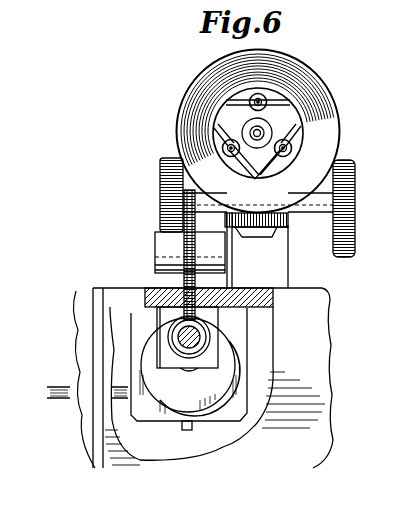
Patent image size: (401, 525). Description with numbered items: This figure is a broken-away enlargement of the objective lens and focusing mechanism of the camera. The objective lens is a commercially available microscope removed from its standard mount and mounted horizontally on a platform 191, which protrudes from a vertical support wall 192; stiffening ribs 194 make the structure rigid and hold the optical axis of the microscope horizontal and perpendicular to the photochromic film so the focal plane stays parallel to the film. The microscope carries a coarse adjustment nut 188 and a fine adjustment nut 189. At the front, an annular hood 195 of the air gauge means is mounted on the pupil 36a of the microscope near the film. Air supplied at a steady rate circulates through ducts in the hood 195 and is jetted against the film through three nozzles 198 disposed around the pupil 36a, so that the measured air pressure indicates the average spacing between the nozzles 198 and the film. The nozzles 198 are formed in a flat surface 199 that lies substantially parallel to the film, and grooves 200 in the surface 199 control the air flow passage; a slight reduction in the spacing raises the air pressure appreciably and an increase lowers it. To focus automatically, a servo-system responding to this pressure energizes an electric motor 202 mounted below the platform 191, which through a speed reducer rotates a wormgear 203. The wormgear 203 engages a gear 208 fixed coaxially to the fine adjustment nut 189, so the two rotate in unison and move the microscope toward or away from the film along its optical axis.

The annular hood 195 is at (308, 73).
The nozzles 198 is at (260, 95).
The flat surface 199 is at (228, 112).
The grooves 200 is at (238, 100).
The pupil 36a is at (266, 133).
The coarse adjustment nut 188 is at (160, 178).
The fine adjustment nut 189 is at (155, 252).
The gear 208 is at (182, 285).
The platform 191 is at (300, 288).
The stiffening ribs 194 is at (77, 346).
The electric motor 202 is at (232, 367).
The wormgear 203 is at (177, 360).
The vertical support wall 192 is at (320, 383).